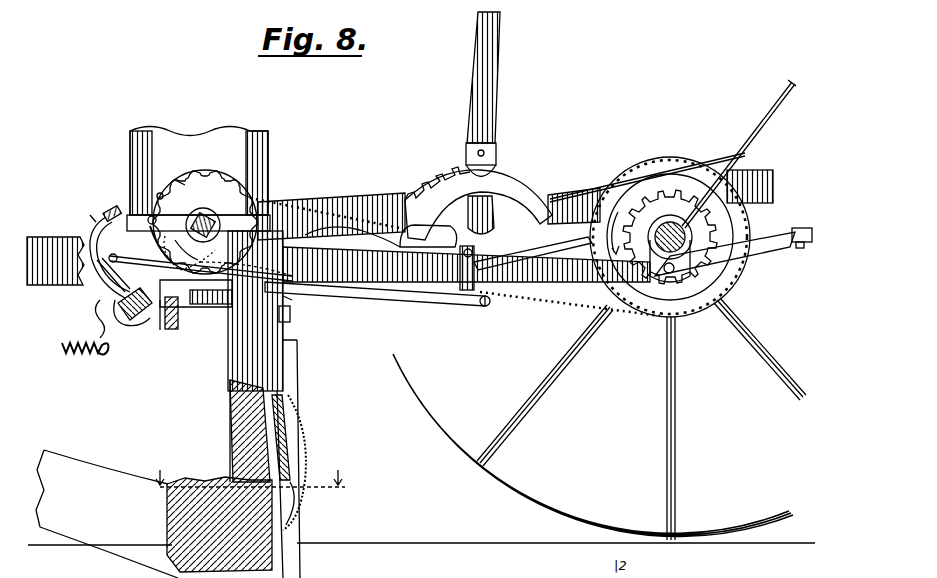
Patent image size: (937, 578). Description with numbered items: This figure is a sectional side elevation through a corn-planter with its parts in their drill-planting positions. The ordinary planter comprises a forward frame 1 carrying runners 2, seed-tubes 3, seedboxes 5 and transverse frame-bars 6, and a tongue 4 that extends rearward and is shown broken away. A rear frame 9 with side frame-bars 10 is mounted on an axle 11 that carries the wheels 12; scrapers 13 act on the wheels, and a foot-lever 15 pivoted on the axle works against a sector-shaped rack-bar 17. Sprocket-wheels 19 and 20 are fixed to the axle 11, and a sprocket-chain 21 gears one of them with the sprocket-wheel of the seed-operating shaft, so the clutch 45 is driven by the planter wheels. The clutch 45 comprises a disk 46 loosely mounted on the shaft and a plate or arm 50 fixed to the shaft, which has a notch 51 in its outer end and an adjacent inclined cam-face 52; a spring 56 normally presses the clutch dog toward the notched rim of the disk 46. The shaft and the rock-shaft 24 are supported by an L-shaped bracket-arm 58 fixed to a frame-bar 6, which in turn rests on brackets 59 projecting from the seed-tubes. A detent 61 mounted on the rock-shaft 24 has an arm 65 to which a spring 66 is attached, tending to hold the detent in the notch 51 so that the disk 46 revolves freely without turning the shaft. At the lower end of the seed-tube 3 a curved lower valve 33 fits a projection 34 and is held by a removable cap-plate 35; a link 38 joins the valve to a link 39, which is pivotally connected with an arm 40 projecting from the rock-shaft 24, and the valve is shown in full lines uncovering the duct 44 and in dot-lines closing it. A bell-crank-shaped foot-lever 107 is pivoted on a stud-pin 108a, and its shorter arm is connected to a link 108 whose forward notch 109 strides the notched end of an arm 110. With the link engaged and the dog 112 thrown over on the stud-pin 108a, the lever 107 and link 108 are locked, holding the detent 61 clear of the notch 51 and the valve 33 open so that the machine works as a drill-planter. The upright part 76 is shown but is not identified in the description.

The forward frame 1 is at (93, 215).
The runners 2 is at (107, 514).
The seed-tubes 3 is at (243, 437).
The tongue 4 is at (42, 237).
The seedboxes 5 is at (200, 152).
The transverse frame-bars 6 is at (170, 329).
The rear frame 9 is at (603, 185).
The side frame-bars 10 is at (566, 198).
The axle 11 is at (245, 485).
The wheels 12 is at (599, 419).
The scrapers 13 is at (381, 236).
The foot-lever 15 is at (606, 278).
The sector-shaped rack-bar 17 is at (430, 185).
The sprocket-wheel 19 is at (676, 168).
The sprocket-wheel 20 is at (664, 227).
The sprocket-chain 21 is at (626, 172).
The rock-shaft 24 is at (133, 314).
The lower valve 33 is at (297, 495).
The projection 34 is at (285, 492).
The cap-plate 35 is at (300, 450).
The link 38 is at (303, 425).
The link 39 is at (290, 315).
The arm 40 is at (293, 300).
The duct 44 is at (268, 462).
The clutch 45 is at (205, 213).
The disk 46 is at (178, 180).
The plate or arm 50 is at (148, 218).
The notch 51 is at (150, 230).
The cam-face 52 is at (180, 245).
The spring 56 is at (158, 187).
The L-shaped bracket-arm 58 is at (160, 330).
The brackets 59 is at (214, 308).
The detent 61 is at (100, 222).
The arm 65 is at (93, 319).
The spring 66 is at (85, 355).
The handle 76 is at (489, 100).
The foot-lever 107 is at (520, 245).
The connecting rod or link 108 is at (452, 300).
The stud-pin 108a is at (467, 250).
The notch 109 is at (98, 264).
The arm 110 is at (112, 262).
The dog 112 is at (462, 268).